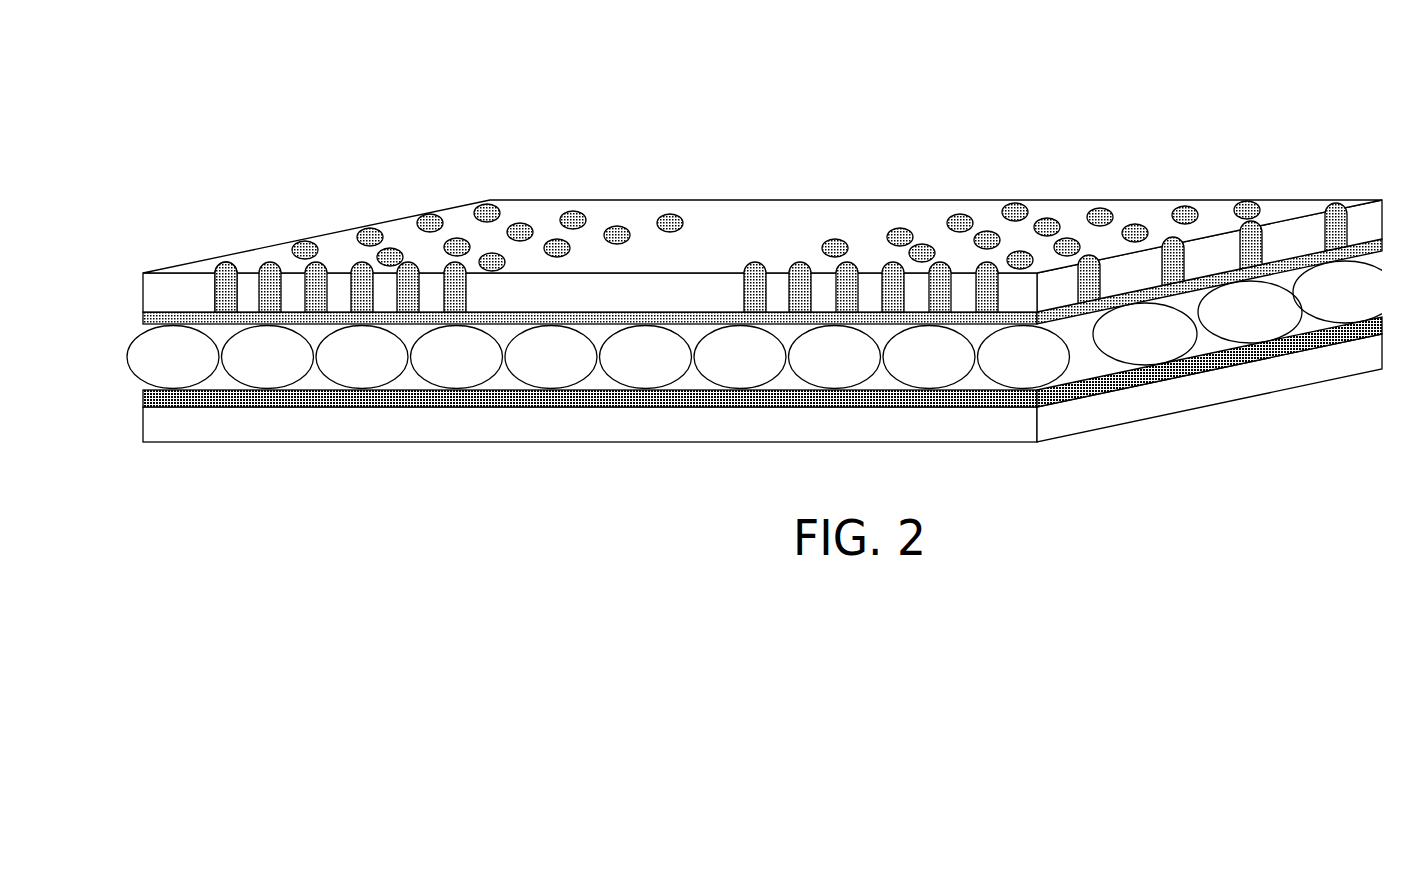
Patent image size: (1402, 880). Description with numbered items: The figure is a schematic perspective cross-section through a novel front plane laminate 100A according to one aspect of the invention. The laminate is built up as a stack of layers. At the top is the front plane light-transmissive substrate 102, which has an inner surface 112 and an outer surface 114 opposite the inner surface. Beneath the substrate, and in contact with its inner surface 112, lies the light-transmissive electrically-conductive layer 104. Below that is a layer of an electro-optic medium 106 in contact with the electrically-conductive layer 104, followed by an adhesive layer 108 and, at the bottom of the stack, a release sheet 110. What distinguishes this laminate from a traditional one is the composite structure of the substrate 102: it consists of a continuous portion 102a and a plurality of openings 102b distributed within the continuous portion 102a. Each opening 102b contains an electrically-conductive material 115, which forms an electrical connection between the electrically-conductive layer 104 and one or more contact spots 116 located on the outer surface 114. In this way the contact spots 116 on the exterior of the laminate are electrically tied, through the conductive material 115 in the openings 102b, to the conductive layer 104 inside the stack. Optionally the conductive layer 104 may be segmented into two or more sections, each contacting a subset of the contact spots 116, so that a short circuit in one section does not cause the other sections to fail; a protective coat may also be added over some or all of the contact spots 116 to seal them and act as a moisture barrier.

The front plane laminate 100A is at (609, 72).
The front plane light-transmissive substrate 102 is at (708, 225).
The continuous portion 102a is at (165, 288).
The openings 102b is at (215, 280).
The light-transmissive electrically-conductive layer 104 is at (157, 320).
The electro-optic medium 106 is at (163, 361).
The adhesive layer 108 is at (143, 397).
The release sheet 110 is at (590, 439).
The inner surface 112 is at (702, 312).
The outer surface 114 is at (772, 230).
The electrically-conductive material 115 is at (268, 262).
The contact spots 116 is at (430, 216).